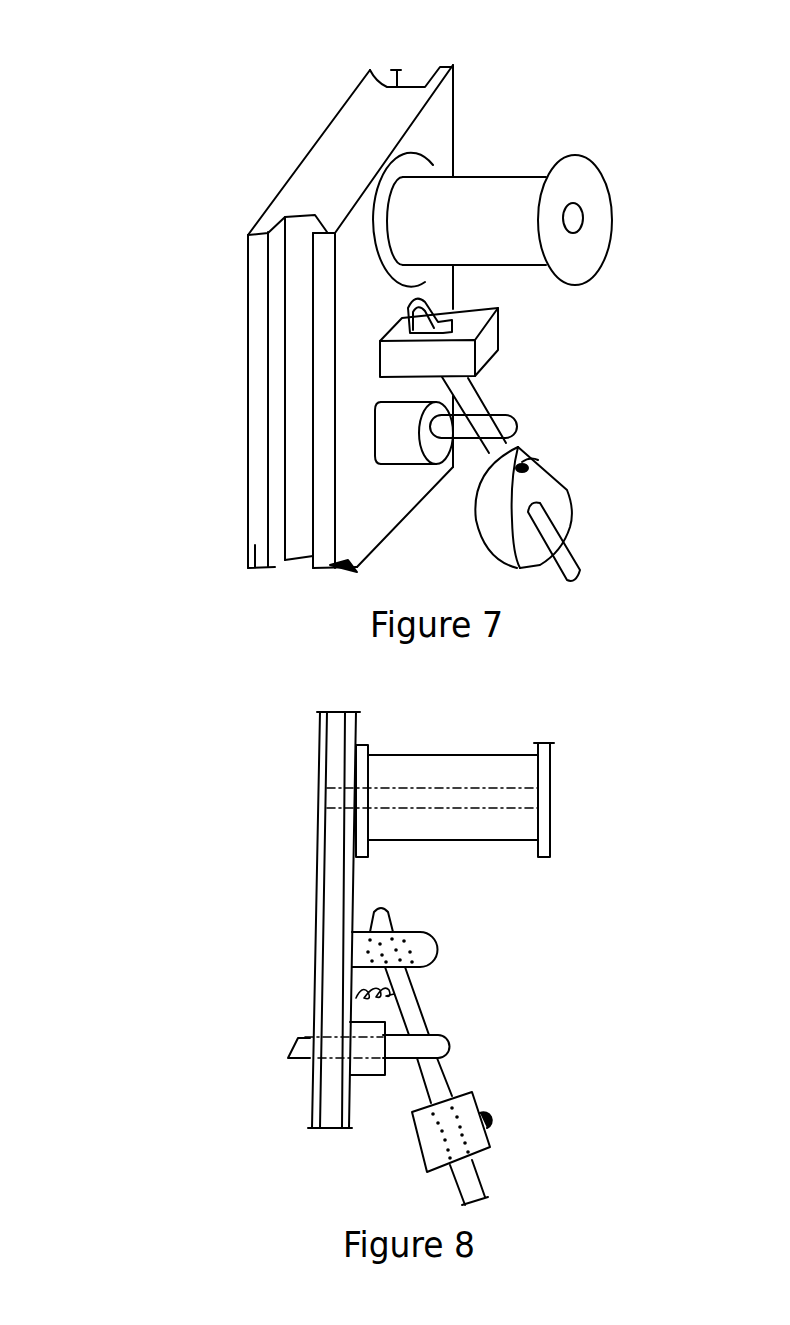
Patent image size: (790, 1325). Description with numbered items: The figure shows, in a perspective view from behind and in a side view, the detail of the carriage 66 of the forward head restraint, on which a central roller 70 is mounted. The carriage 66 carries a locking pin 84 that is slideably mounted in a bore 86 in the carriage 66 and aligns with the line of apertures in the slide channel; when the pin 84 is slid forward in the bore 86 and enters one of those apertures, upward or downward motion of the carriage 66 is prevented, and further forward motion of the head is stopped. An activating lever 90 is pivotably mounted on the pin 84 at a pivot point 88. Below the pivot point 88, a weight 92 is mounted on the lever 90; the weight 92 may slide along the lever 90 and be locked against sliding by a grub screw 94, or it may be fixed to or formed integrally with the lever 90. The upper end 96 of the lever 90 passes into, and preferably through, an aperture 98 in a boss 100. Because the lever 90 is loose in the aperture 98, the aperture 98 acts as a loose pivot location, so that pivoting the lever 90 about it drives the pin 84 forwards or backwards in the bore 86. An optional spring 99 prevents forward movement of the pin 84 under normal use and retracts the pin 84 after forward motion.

In FIG. 7, the carriage 66 is at (427, 127).
In FIG. 8, the carriage 66 is at (317, 704).
In FIG. 7, the central roller 70 is at (593, 220).
In FIG. 8, the central roller 70 is at (416, 797).
In FIG. 7, the locking pin 84 is at (521, 423).
In FIG. 8, the locking pin 84 is at (292, 1046).
In FIG. 8, the bore 86 is at (310, 1060).
In FIG. 7, the pivot point 88 is at (481, 427).
In FIG. 8, the pivot point 88 is at (421, 1049).
In FIG. 7, the activating lever 90 is at (575, 577).
In FIG. 8, the activating lever 90 is at (480, 1182).
In FIG. 7, the weight 92 is at (553, 496).
In FIG. 8, the weight 92 is at (418, 1149).
In FIG. 7, the grub screw 94 is at (540, 460).
In FIG. 8, the grub screw 94 is at (491, 1113).
In FIG. 8, the upper end 96 is at (384, 905).
In FIG. 8, the aperture 98 is at (407, 933).
In FIG. 8, the spring 99 is at (360, 1007).
In FIG. 7, the boss 100 is at (497, 328).
In FIG. 8, the boss 100 is at (438, 948).